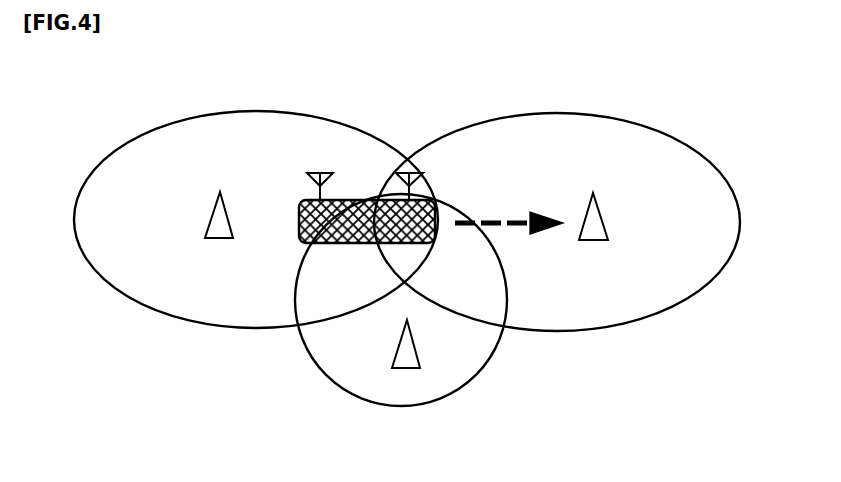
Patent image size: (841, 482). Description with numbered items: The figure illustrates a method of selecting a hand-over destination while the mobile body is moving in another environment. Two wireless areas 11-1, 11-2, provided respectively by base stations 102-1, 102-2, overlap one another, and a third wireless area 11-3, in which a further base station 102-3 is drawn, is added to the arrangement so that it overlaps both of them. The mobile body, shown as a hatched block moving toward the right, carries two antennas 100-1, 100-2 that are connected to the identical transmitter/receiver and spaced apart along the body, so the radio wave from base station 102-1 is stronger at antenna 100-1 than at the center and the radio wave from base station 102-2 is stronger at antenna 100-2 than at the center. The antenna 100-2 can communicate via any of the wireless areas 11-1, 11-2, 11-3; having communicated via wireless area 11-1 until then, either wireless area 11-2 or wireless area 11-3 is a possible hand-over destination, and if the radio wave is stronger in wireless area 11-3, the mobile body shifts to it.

The wireless area 11-1 is at (262, 112).
The wireless area 11-2 is at (560, 113).
The third wireless area 11-3 is at (348, 392).
The antenna 100-1 is at (320, 173).
The antenna 100-2 is at (409, 173).
The base station 102-1 is at (215, 206).
The base station 102-2 is at (598, 208).
The base station 102-3 is at (412, 368).